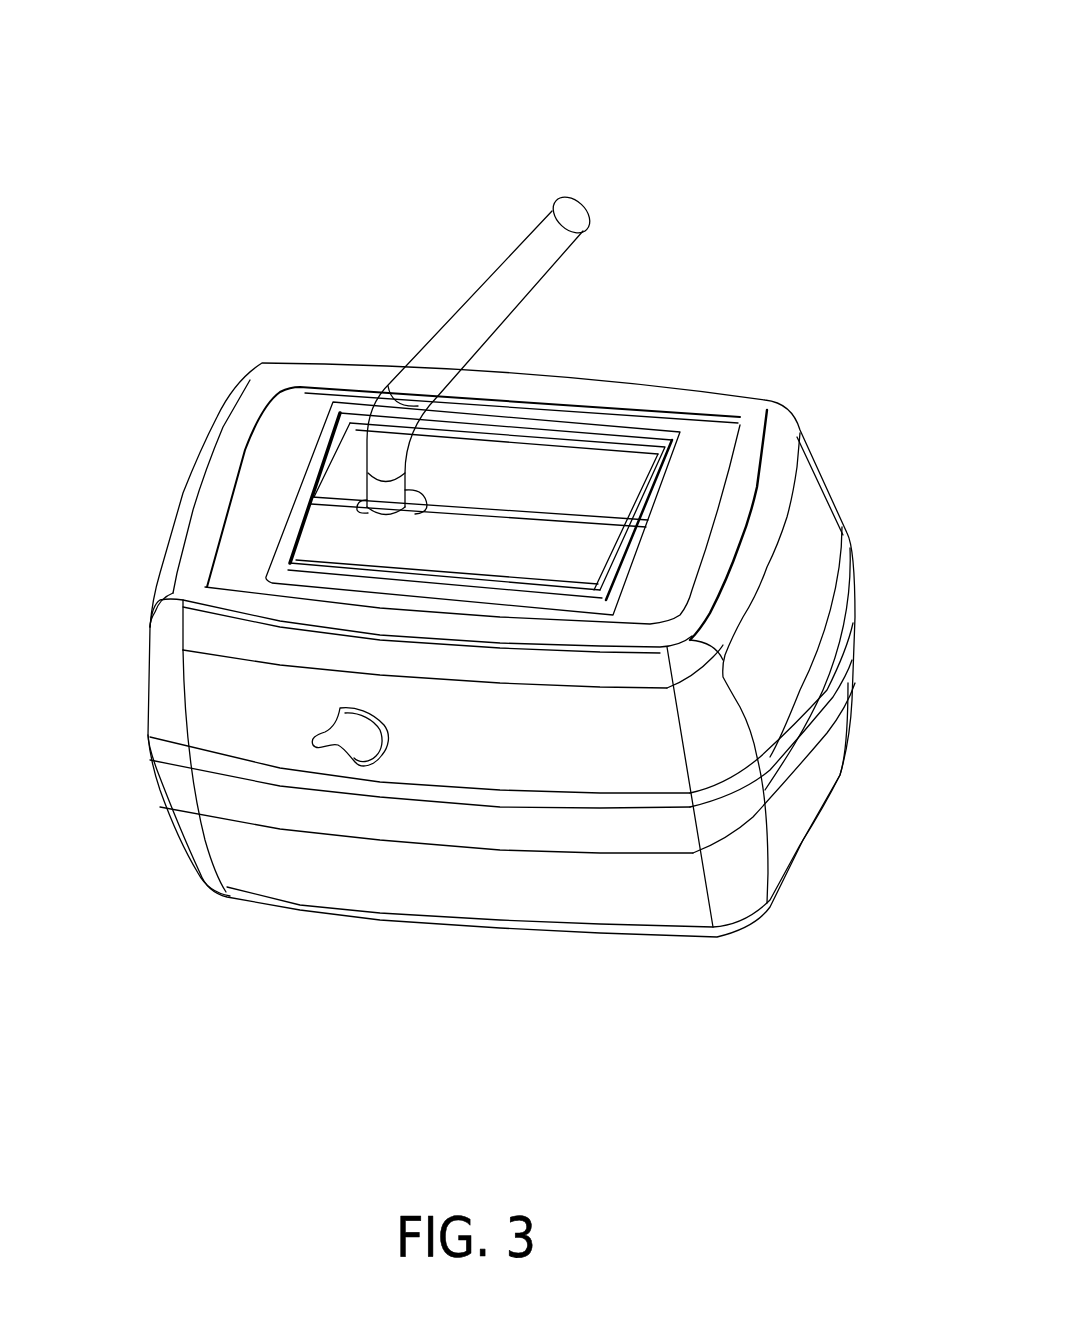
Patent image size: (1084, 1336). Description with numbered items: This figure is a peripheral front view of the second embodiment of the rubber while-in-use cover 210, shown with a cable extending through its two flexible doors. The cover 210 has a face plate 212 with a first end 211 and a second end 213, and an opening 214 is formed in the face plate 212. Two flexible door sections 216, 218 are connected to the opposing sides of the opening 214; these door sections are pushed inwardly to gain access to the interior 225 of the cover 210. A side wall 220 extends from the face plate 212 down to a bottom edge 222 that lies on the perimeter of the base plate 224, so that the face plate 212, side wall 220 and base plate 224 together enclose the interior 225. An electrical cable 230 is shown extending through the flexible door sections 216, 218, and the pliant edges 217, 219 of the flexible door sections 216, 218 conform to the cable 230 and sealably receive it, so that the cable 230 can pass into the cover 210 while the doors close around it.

The cover 210 is at (397, 234).
The first end 211 is at (250, 520).
The face plate 212 is at (703, 487).
The second end 213 is at (675, 550).
The opening 214 is at (627, 437).
The flexible door section 216 is at (564, 488).
The pliant edge 217 is at (427, 500).
The flexible door section 218 is at (523, 568).
The pliant edge 219 is at (368, 505).
The side wall 220 is at (777, 680).
The bottom edge 222 is at (542, 928).
The base plate 224 is at (240, 900).
The interior 225 is at (337, 755).
The electrical cable 230 is at (513, 247).